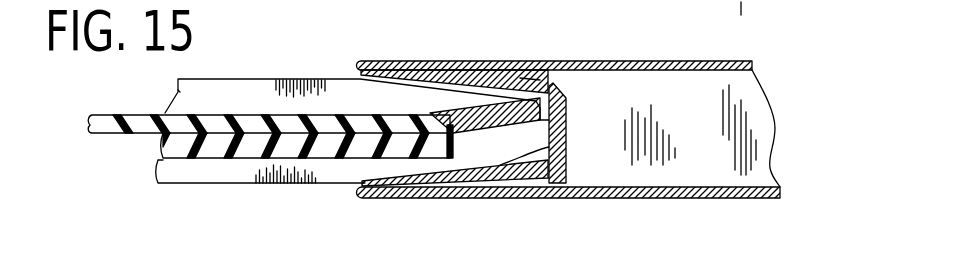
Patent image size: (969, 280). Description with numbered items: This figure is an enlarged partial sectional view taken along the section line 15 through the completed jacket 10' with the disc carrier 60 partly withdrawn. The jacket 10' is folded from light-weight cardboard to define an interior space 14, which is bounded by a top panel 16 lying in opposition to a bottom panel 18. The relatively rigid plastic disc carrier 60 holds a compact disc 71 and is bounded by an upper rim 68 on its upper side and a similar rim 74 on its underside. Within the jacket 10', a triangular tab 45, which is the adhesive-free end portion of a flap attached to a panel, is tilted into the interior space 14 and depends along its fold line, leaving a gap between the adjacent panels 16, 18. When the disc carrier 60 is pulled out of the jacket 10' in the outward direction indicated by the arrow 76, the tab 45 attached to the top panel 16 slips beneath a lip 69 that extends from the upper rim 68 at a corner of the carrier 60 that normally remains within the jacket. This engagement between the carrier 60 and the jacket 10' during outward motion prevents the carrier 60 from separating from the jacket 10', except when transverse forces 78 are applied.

The jacket 10' is at (807, 115).
The interior space 14 is at (733, 152).
The section line 15 is at (578, 17).
The top panel 16 is at (728, 62).
The bottom panel 18 is at (750, 186).
The triangular tab 45 is at (440, 62).
The disc carrier 60 is at (325, 74).
The upper rim 68 is at (178, 90).
The lip 69 is at (520, 78).
The compact disc 71 is at (104, 113).
The rim 74 is at (178, 174).
The arrow 76 is at (237, 203).
The transverse forces 78 is at (742, 12).